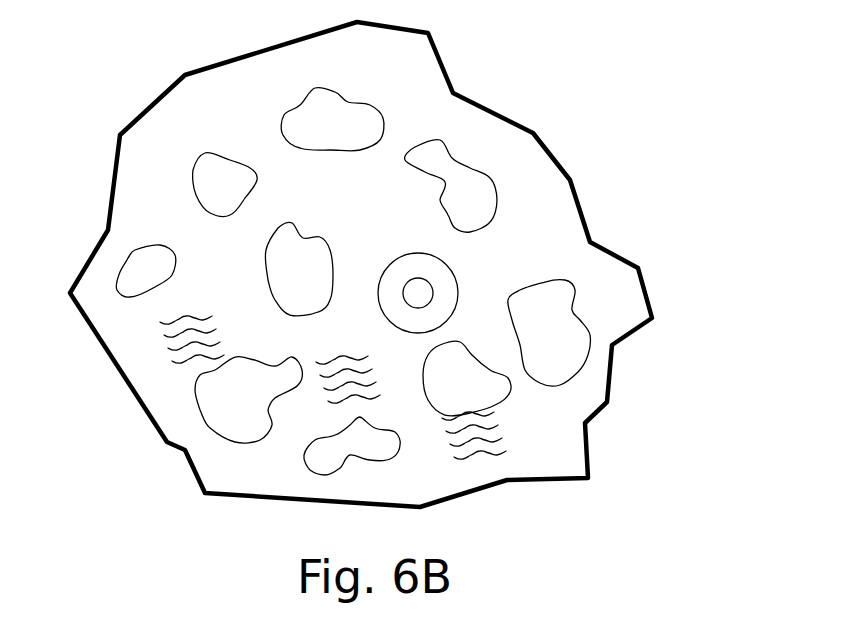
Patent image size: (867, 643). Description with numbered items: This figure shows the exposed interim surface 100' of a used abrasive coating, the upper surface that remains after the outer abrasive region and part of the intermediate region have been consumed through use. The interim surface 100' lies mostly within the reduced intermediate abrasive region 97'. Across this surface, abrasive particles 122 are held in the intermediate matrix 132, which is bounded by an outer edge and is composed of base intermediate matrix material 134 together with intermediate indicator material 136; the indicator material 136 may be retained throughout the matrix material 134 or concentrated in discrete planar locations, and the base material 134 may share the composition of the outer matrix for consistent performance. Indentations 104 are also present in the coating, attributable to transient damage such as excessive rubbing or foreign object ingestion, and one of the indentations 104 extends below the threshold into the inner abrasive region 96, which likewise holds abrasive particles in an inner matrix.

The interim surface 100' is at (410, 263).
The reduced intermediate abrasive region 97' is at (353, 262).
The abrasive particles 122 is at (432, 188).
The base intermediate matrix material 134 is at (173, 196).
The intermediate indicator material 136 is at (213, 312).
The inner abrasive region 96 is at (420, 291).
The indentations 104 is at (463, 290).
The intermediate matrix 132 is at (594, 274).